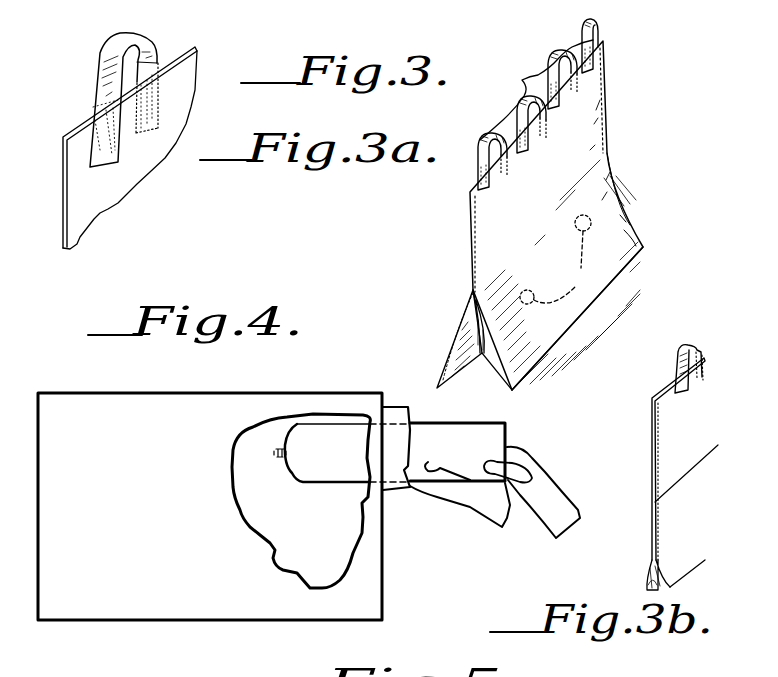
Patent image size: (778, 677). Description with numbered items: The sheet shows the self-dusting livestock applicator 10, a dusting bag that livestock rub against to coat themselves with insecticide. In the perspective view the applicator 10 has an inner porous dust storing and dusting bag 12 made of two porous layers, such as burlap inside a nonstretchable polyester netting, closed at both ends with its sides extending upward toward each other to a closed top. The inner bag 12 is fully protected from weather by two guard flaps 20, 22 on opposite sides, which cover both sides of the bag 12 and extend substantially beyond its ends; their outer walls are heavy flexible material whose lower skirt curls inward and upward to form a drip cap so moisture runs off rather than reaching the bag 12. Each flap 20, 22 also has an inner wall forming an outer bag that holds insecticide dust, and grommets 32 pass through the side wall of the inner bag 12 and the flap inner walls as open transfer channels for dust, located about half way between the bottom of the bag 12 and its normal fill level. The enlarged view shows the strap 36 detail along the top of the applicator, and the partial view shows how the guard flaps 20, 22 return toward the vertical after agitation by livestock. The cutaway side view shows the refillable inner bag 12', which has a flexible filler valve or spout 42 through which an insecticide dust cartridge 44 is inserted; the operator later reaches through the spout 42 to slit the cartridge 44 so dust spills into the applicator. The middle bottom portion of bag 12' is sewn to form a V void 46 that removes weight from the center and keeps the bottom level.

In FIG. 3A, the cartridge loading livestock dusting bag or applicator 10 is at (51, 146).
In FIG. 3, the cartridge loading livestock dusting bag or applicator 10 is at (637, 165).
In FIG. 3B, the cartridge loading livestock dusting bag or applicator 10 is at (648, 458).
In FIG. 3, the inner porous dust storing and dusting bag 12 is at (492, 351).
In FIG. 4, the inner bag 12' is at (210, 492).
In FIG. 3, the guard flap 20 is at (552, 337).
In FIG. 3B, the guard flap 20 is at (689, 562).
In FIG. 3, the guard flap 22 is at (436, 344).
In FIG. 3B, the guard flap 22 is at (645, 555).
In FIG. 3, the grommet 32 is at (556, 259).
In FIG. 3A, the handle loop 36 is at (103, 52).
In FIG. 3, the handle loop 36 is at (522, 80).
In FIG. 3B, the handle loop 36 is at (686, 346).
In FIG. 4, the flexible filler valve or spout 42 is at (395, 492).
In FIG. 4, the insecticide dust cartridge 44 is at (507, 432).
In FIG. 4, the V void 46 is at (173, 620).